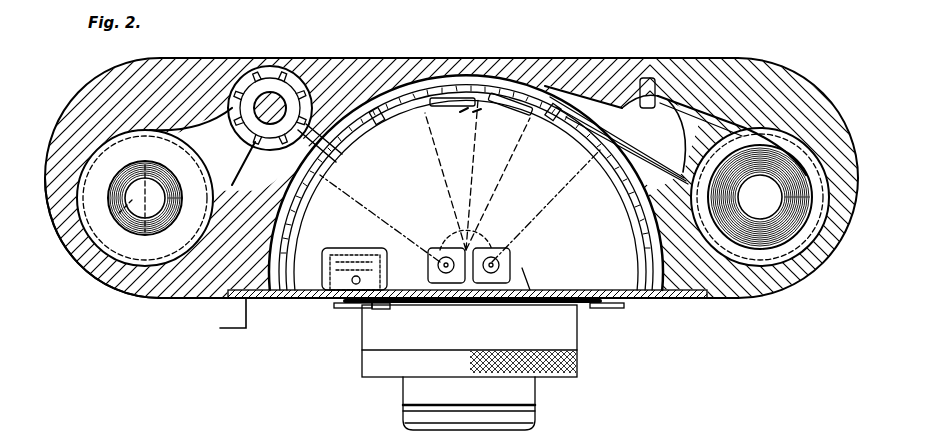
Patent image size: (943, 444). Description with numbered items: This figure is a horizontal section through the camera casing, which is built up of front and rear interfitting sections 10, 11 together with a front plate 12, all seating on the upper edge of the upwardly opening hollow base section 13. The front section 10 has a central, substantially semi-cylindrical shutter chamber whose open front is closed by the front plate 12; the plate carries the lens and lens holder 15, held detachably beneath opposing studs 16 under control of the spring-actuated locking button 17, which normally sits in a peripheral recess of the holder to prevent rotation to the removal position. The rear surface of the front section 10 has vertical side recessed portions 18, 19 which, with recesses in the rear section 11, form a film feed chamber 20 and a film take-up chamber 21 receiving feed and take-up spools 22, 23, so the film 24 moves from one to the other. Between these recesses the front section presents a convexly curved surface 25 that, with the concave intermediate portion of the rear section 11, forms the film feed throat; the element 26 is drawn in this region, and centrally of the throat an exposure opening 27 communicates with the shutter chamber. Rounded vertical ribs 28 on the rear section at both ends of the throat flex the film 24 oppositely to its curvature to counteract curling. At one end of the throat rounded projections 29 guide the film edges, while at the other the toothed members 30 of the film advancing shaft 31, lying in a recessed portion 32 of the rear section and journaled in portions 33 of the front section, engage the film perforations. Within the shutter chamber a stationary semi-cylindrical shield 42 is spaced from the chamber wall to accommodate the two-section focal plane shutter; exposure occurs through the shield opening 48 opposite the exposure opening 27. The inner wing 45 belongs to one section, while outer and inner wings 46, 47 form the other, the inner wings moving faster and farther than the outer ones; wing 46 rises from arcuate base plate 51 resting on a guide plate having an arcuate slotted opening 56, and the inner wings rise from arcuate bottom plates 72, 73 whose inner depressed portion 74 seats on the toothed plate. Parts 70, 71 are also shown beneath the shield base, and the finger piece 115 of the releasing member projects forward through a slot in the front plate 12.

The front section 10 is at (766, 286).
The rear section 11 is at (781, 80).
The front plate 12 is at (677, 293).
The hollow base section 13 is at (524, 292).
The lens and lens holder 15 is at (392, 362).
The studs 16 is at (320, 306).
The locking button 17 is at (362, 305).
The side recessed portion 18 is at (812, 272).
The side recessed portion 19 is at (128, 272).
The film feed chamber 20 is at (838, 252).
The film take-up chamber 21 is at (108, 168).
The feed spool 22 is at (760, 197).
The take-up spool 23 is at (130, 212).
The film 24 is at (717, 108).
The convexly curved surface 25 is at (314, 108).
The top wall 26 is at (587, 98).
The exposure opening 27 is at (536, 90).
The rounded vertical ribs 28 is at (317, 113).
The rounded projections 29 is at (668, 92).
The toothed members 30 is at (278, 88).
The film advancing shaft 31 is at (266, 100).
The recessed portion 32 is at (236, 95).
The journal portions 33 is at (232, 182).
The shield 42 is at (318, 172).
The inner shutter wing 45 is at (486, 84).
The outer shutter wing 46 is at (626, 182).
The inner shutter wing 47 is at (401, 100).
The shield opening 48 is at (533, 84).
The arcuate base plate 51 is at (476, 140).
The arcuate slotted opening 56 is at (386, 208).
The lens unit 70 is at (447, 262).
The lens unit 71 is at (496, 262).
The arcuate bottom plate 72 is at (432, 184).
The arcuate bottom plate 73 is at (546, 170).
The inner depressed portion 74 is at (296, 246).
The finger piece 115 is at (240, 322).